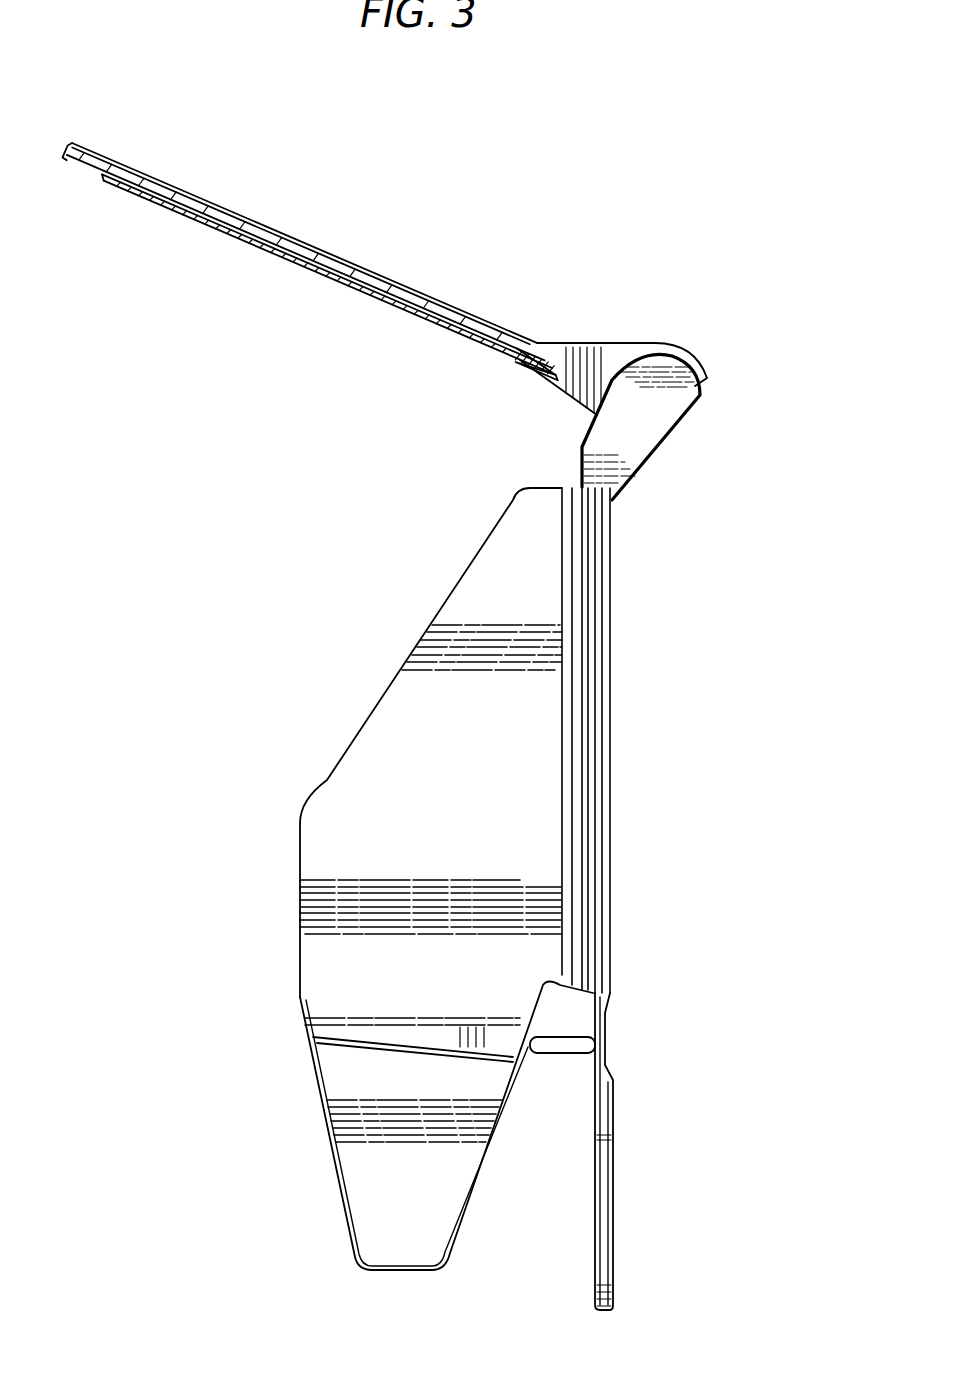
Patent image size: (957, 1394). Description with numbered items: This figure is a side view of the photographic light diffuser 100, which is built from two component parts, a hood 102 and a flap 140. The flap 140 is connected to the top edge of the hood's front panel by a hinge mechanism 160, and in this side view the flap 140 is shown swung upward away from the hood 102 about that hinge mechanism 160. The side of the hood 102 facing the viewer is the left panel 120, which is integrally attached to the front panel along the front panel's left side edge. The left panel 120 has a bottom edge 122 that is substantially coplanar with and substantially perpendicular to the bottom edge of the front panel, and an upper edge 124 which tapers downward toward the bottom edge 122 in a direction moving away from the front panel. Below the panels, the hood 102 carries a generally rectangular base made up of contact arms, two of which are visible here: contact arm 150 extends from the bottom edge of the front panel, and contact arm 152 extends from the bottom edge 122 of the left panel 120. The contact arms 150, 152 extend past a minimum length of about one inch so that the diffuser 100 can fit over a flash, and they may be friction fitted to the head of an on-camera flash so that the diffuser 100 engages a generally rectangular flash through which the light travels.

The diffuser 100 is at (772, 311).
The flap 140 is at (163, 182).
The hinge mechanism 160 is at (645, 436).
The hood 102 is at (660, 615).
The upper edge 124 is at (382, 697).
The left panel 120 is at (317, 908).
The bottom edge 122 is at (362, 1027).
The contact arm 152 is at (387, 1190).
The contact arm 150 is at (613, 1165).